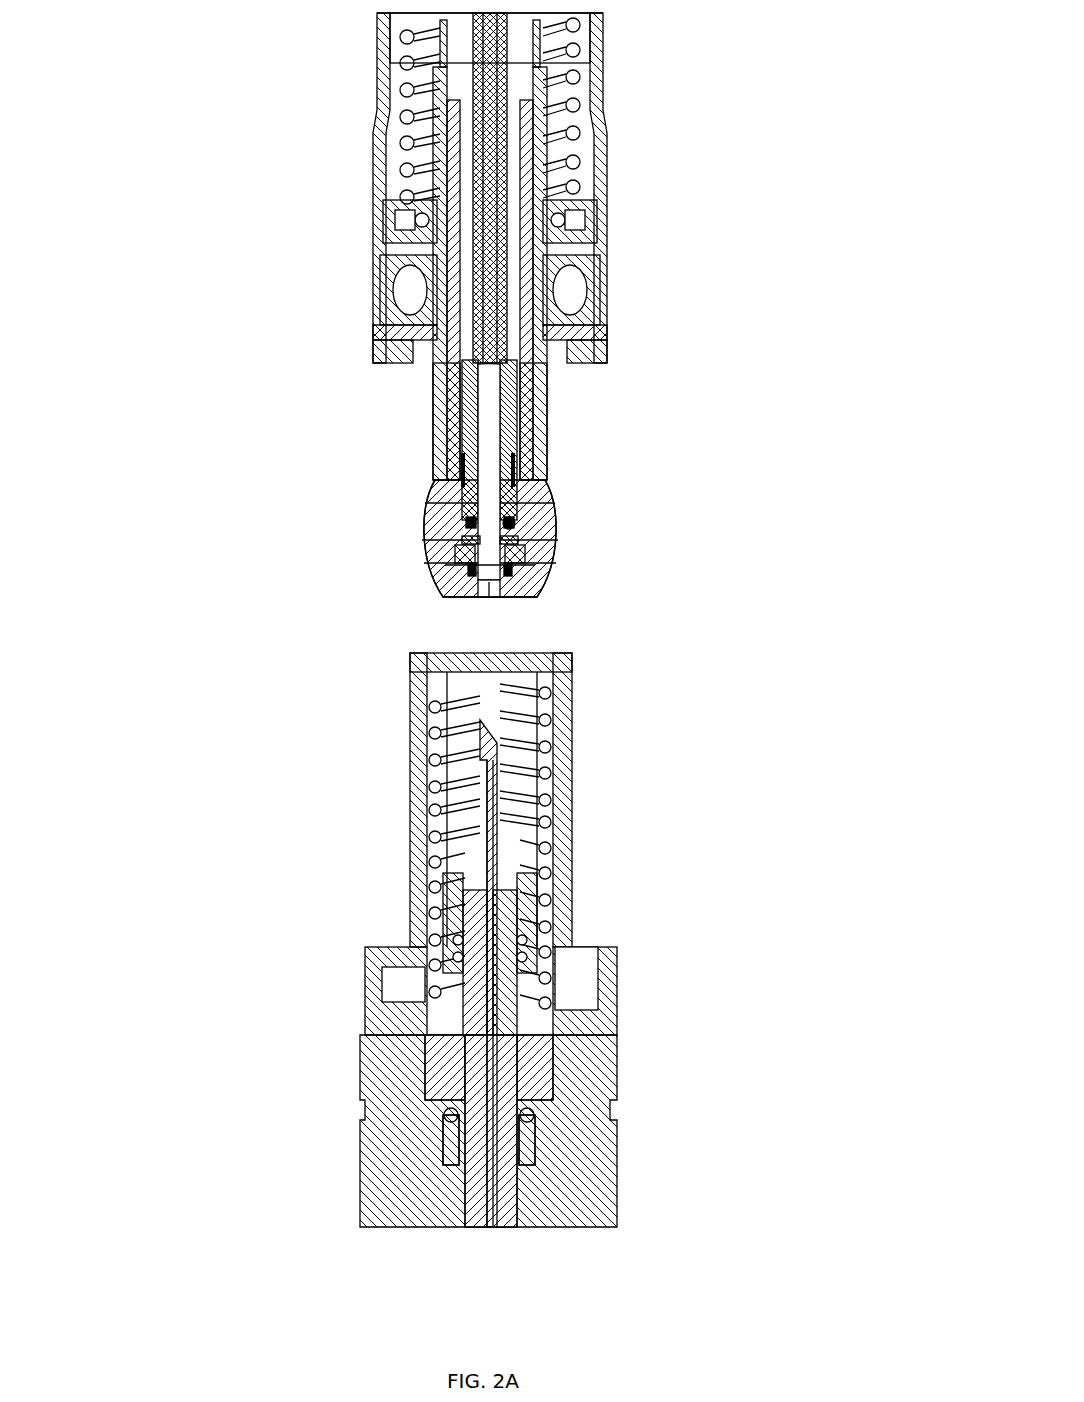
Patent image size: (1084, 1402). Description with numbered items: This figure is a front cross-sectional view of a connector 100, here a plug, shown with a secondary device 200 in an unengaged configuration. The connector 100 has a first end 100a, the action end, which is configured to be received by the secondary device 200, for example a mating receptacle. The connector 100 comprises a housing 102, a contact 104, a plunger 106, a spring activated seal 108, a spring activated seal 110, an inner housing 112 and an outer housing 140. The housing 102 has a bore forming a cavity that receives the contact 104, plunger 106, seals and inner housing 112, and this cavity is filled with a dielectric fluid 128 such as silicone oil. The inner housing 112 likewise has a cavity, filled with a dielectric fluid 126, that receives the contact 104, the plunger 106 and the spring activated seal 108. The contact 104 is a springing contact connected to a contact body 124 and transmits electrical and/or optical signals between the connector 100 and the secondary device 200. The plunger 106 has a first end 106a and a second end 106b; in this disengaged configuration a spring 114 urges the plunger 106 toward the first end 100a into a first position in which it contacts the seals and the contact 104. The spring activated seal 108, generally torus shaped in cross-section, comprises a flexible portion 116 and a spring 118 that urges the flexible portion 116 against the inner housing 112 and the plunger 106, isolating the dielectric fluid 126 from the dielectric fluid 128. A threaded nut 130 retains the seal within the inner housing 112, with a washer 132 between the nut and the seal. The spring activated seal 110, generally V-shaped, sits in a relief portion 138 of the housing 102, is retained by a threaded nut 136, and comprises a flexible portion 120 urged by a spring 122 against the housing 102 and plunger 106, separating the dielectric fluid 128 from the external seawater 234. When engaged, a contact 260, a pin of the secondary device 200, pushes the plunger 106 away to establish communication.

The connector 100 is at (600, 92).
The outer housing 140 is at (600, 207).
The spring 114 is at (477, 363).
The dielectric fluid 126 is at (490, 363).
The second end 106b is at (490, 367).
The plunger 106 is at (497, 432).
The inner housing 112 is at (462, 448).
The flexible portion 116 is at (500, 503).
The contact body 124 is at (515, 448).
The contact 104 is at (505, 484).
The spring activated seal 108 is at (447, 506).
The housing 102 is at (550, 536).
The washer 132 is at (470, 528).
The threaded nut 130 is at (470, 534).
The dielectric fluid 128 is at (462, 539).
The spring activated seal 110 is at (458, 560).
The spring 118 is at (507, 520).
The flexible portion 120 is at (505, 563).
The threaded nut 136 is at (458, 597).
The relief portion 138 is at (533, 587).
The first end 106a is at (490, 590).
The spring 122 is at (505, 565).
The first end 100a is at (540, 595).
The seawater 234 is at (818, 563).
The secondary device 200 is at (608, 965).
The contact 260 is at (497, 745).